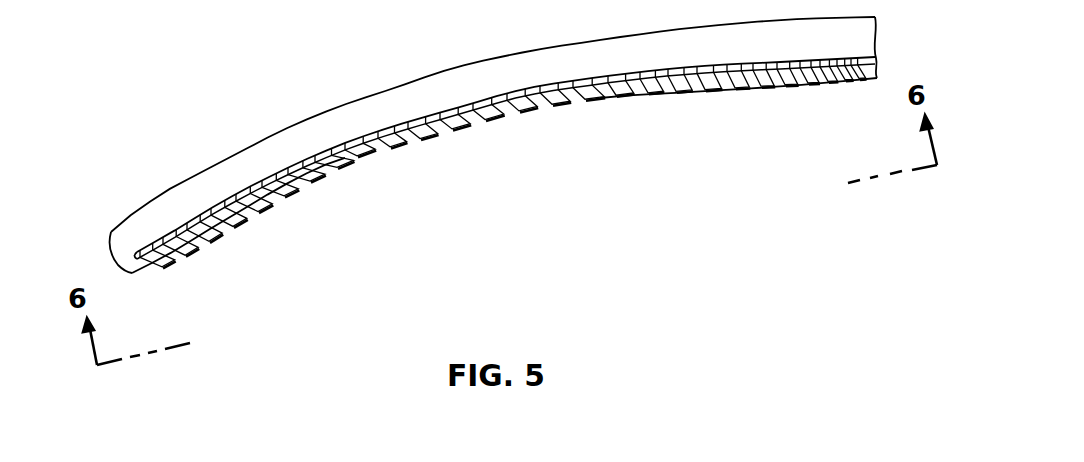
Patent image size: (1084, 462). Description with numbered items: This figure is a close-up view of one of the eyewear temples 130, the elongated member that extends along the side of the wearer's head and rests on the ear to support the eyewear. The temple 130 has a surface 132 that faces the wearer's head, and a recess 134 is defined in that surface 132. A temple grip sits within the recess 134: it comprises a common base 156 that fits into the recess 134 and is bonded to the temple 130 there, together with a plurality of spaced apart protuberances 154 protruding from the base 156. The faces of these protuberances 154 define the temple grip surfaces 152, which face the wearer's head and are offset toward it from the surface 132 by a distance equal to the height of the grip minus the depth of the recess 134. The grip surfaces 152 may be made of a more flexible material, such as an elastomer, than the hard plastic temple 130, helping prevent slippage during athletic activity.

The temple 130 is at (241, 165).
The surface 132 is at (410, 127).
The recess 134 is at (878, 63).
The temple grip surfaces 152 is at (503, 167).
The protuberances 154 is at (511, 100).
The common base 156 is at (668, 86).